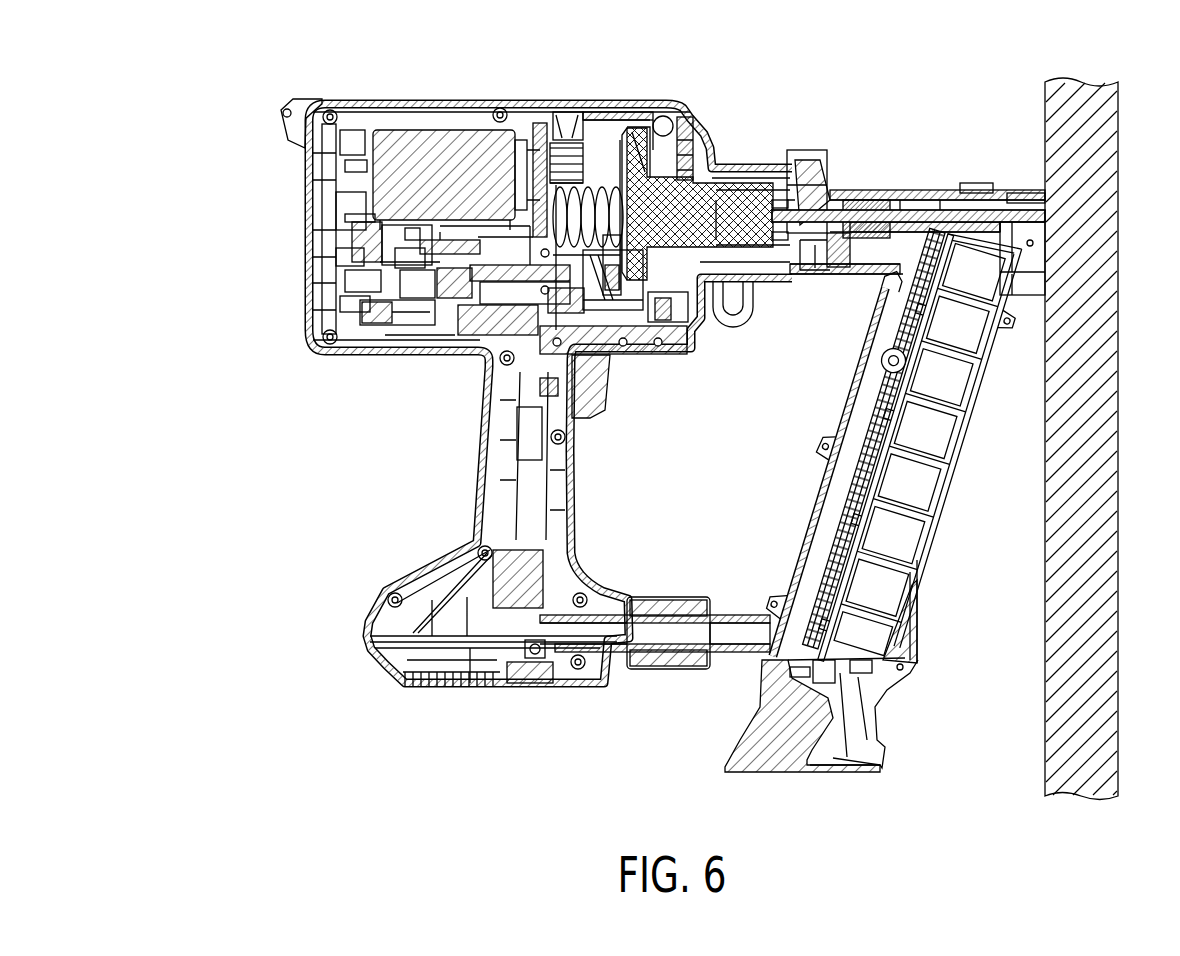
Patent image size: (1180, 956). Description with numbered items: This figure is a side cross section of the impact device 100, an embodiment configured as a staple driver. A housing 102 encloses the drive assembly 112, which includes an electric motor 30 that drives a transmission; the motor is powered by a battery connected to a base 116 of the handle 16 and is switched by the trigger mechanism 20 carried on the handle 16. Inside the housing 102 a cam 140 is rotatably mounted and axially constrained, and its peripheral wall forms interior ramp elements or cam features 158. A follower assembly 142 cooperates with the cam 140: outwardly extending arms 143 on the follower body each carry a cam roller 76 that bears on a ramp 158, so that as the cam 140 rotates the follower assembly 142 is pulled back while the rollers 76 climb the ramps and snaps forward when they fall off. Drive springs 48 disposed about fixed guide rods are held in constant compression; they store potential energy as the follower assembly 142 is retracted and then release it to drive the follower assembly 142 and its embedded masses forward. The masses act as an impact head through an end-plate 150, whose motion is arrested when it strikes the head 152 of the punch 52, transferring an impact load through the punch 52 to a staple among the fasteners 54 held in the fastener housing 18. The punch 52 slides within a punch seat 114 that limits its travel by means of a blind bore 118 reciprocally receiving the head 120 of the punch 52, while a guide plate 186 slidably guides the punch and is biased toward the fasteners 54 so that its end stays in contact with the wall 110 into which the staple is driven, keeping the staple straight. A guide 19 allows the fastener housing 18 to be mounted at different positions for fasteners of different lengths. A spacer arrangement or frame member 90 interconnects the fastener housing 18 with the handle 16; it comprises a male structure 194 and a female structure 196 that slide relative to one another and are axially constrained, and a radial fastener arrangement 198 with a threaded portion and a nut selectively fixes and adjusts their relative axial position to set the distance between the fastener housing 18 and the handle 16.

The impact device 100 is at (196, 121).
The housing 102 is at (355, 101).
The electric motor 30 is at (445, 133).
The drive spring 48 is at (542, 150).
The cam 140 is at (595, 103).
The arm 143 is at (617, 137).
The cam roller 76 is at (657, 127).
The follower assembly 142 is at (720, 215).
The ramp element 158 is at (637, 352).
The end-plate 150 is at (757, 283).
The head of the punch 120 is at (812, 170).
The head of the punch 152 is at (815, 200).
The blind bore 118 is at (868, 195).
The punch 52 is at (910, 215).
The guide plate 186 is at (980, 195).
The punch seat 114 is at (840, 280).
The guide 19 is at (810, 280).
The wall 110 is at (1097, 137).
The fastener housing 18 is at (965, 372).
The fastener 54 is at (878, 332).
The handle 16 is at (480, 470).
The trigger mechanism 20 is at (590, 415).
The base 116 is at (478, 705).
The male structure 194 is at (730, 615).
The female structure 196 is at (627, 603).
The radial fastener arrangement 198 is at (660, 668).
The drive assembly 112 is at (372, 376).
The spacer arrangement 90 is at (672, 565).